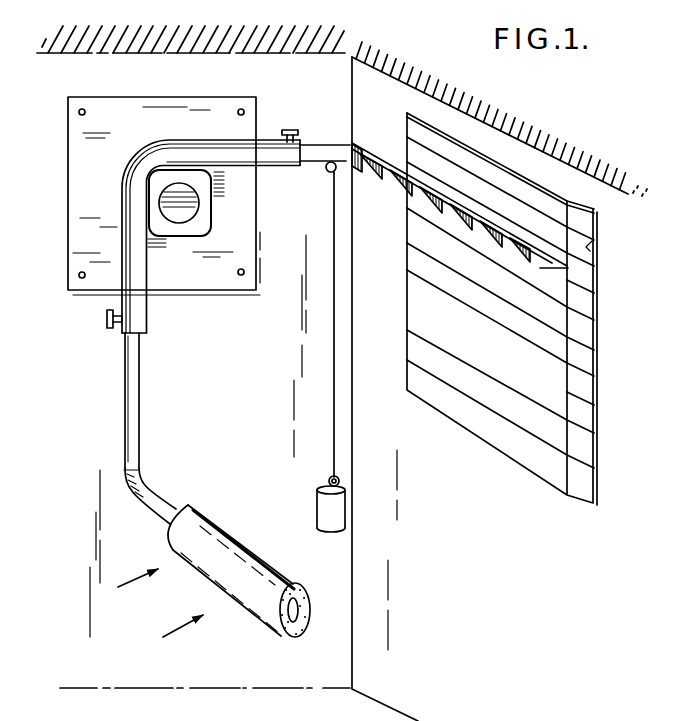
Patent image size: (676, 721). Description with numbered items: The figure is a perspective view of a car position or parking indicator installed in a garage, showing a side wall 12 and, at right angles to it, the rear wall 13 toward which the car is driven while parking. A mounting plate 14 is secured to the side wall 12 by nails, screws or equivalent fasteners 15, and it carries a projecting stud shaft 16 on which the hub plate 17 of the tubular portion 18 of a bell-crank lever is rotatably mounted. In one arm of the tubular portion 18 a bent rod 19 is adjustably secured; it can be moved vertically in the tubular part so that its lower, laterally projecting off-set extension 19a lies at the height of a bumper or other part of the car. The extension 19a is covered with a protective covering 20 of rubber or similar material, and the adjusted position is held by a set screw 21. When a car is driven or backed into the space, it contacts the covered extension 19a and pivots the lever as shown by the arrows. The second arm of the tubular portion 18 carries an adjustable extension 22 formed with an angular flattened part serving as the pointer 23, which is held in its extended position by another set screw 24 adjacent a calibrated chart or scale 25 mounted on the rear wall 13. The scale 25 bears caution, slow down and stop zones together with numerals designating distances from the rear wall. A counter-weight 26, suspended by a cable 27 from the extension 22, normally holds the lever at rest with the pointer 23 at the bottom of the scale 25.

The side wall 12 is at (207, 62).
The rear wall 13 is at (387, 88).
The mounting plate 14 is at (140, 88).
The fasteners 15 is at (78, 113).
The stud shaft 16 is at (176, 218).
The hub plate 17 is at (202, 226).
The tubular portion of bell-crank lever 18 is at (227, 130).
The bent rod 19 is at (140, 390).
The off-set extension 19a is at (160, 496).
The protective covering 20 is at (217, 535).
The set screw 21 is at (107, 328).
The adjustable extension 22 is at (313, 152).
The pointer 23 is at (383, 166).
The set screw 24 is at (294, 128).
The calibrated chart or scale 25 is at (322, 506).
The counter-weight 26 is at (336, 375).
The cable 27 is at (326, 171).